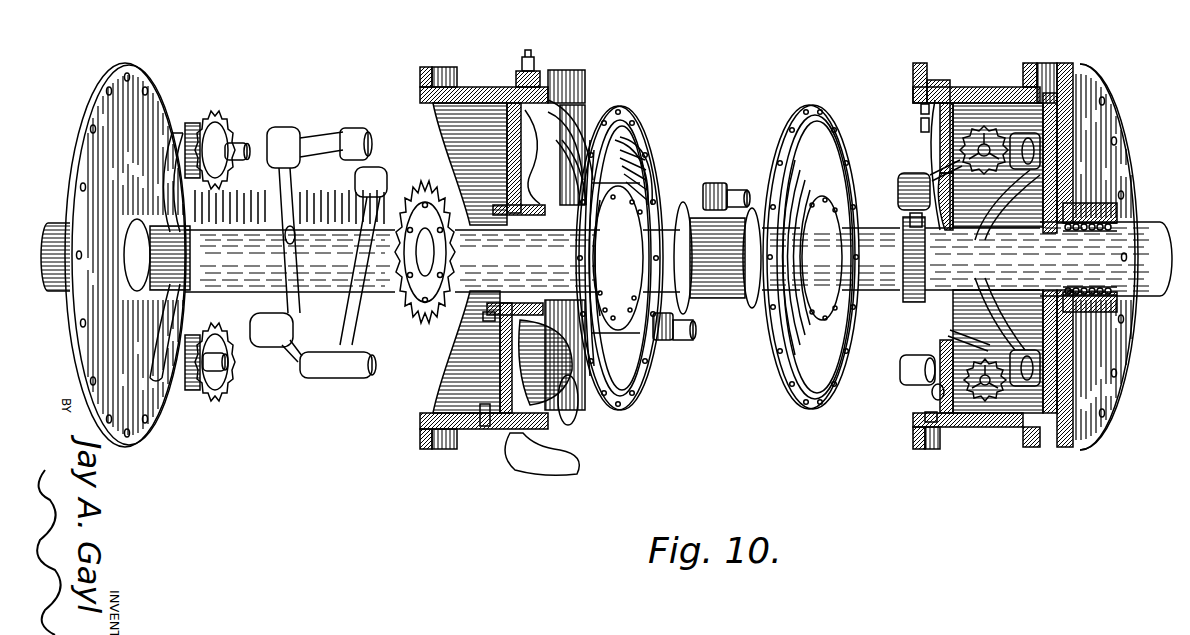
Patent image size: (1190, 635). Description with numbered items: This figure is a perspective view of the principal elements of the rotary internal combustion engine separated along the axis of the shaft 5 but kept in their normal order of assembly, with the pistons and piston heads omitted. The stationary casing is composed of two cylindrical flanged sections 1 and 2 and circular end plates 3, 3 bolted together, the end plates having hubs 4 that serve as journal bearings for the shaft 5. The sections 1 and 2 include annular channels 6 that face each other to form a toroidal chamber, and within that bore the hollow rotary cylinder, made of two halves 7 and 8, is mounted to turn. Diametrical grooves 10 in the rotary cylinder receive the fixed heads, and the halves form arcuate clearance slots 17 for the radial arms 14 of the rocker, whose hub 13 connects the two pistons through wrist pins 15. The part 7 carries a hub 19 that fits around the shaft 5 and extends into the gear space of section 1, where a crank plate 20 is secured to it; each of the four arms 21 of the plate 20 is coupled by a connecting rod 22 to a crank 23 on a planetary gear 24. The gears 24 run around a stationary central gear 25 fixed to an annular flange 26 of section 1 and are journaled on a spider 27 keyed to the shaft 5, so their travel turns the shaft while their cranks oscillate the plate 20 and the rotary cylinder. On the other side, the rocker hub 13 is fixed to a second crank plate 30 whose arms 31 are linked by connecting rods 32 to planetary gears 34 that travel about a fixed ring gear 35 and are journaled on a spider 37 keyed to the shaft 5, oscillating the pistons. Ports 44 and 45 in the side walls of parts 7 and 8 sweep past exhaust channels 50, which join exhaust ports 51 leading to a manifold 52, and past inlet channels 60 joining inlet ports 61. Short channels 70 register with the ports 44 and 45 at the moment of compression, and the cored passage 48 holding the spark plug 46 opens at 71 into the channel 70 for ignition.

The cylindrical flanged casing section 1 is at (482, 95).
The cylindrical flanged casing section 2 is at (993, 86).
The circular end plate 3 is at (90, 112).
The hub 4 is at (1105, 195).
The shaft 5 is at (56, 238).
The annular channel 6 is at (572, 145).
The rotary cylinder half 7 is at (626, 384).
The rotary cylinder half 8 is at (778, 142).
The diametrical groove 10 is at (622, 128).
The sleeve or hub of rocker 13 is at (745, 272).
The radial arm 14 is at (718, 195).
The wrist pin 15 is at (740, 190).
The arcuate clearance slot 17 is at (717, 258).
The hub 19 is at (540, 249).
The crank plate 20 is at (335, 300).
The arm of crank plate 21 is at (280, 170).
The pitman or connecting rod 22 is at (330, 135).
The crank 23 is at (240, 145).
The planetary gear 24 is at (225, 125).
The central gear 25 is at (450, 185).
The annular flange 26 is at (485, 318).
The spider 27 is at (168, 185).
The crank plate 30 is at (965, 360).
The arm of crank plate 31 is at (920, 370).
The connecting rod 32 is at (955, 180).
The planetary gear 34 is at (1040, 100).
The ring gear 35 is at (925, 300).
The spider 37 is at (1060, 200).
The port 44 is at (642, 150).
The port 45 is at (840, 133).
The spark plug 46 is at (527, 75).
The cored passage 48 is at (540, 97).
The circumferentially elongated channel 50 is at (570, 405).
The exhaust port 51 is at (555, 370).
The manifold 52 is at (510, 470).
The circumferentially elongated channel 60 is at (928, 125).
The inlet port 61 is at (925, 110).
The short channel 70 is at (565, 120).
The opening 71 is at (539, 157).